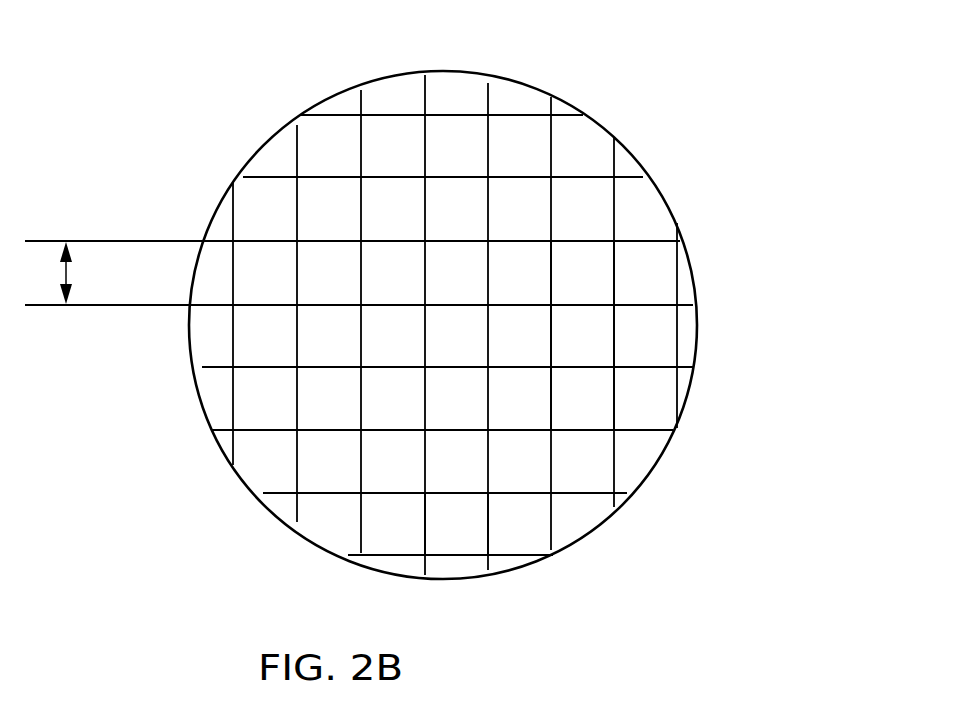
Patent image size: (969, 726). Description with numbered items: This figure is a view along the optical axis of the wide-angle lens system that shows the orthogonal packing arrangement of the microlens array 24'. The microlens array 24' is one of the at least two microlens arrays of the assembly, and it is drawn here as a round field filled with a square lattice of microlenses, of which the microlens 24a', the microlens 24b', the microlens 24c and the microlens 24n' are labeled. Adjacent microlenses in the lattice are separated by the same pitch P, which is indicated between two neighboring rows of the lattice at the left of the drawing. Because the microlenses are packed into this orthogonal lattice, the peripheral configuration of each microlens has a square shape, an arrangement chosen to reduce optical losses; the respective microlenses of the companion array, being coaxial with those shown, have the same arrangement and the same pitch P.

The microlens array 24' is at (431, 299).
The microlens 24a' is at (726, 224).
The microlens 24b' is at (727, 371).
The microlens 24c is at (594, 385).
The microlens 24n' is at (591, 557).
The pitch P is at (70, 275).